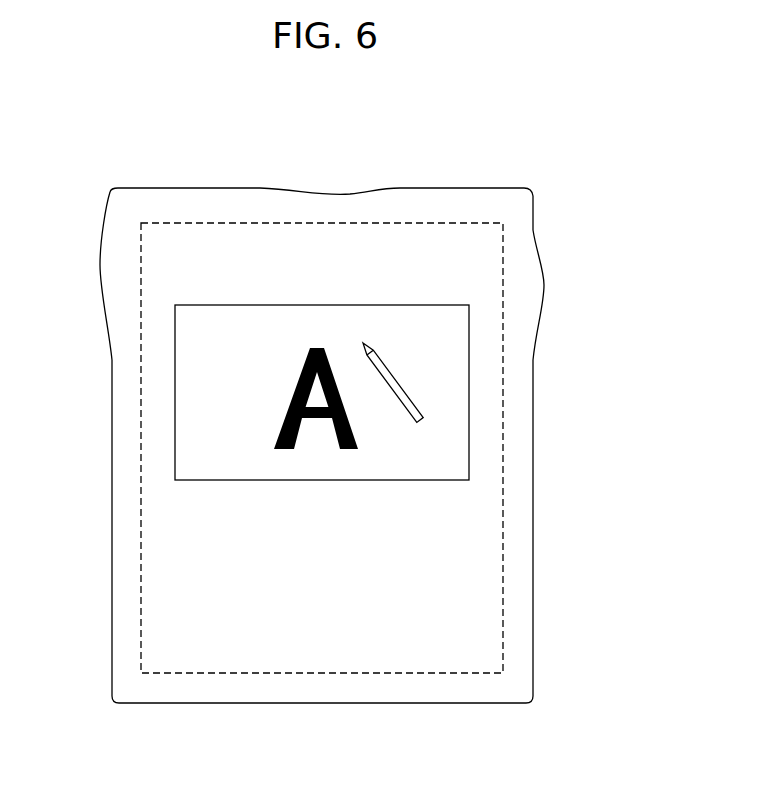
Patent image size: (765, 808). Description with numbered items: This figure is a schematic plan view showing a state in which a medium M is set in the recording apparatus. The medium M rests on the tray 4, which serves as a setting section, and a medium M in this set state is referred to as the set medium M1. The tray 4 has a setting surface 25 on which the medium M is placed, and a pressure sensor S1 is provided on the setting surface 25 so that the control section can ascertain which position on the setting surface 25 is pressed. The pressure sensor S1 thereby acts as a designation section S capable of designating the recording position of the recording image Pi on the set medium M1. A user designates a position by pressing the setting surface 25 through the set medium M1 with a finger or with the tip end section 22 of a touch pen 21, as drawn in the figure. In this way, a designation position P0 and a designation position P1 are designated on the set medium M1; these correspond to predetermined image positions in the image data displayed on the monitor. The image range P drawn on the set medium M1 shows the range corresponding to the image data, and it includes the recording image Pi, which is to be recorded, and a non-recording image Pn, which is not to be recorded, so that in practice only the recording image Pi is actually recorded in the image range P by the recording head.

The medium M is at (322, 396).
The set medium M1 is at (389, 188).
The tray 4 is at (395, 394).
The setting surface 25 is at (395, 448).
The designation section S is at (395, 448).
The pressure sensor S1 is at (473, 567).
The image range P is at (309, 313).
The designation position P0 is at (253, 313).
The designation position P1 is at (214, 298).
The non-recording image Pn is at (197, 298).
The recording image Pi is at (280, 425).
The touch pen 21 is at (445, 282).
The tip end section 22 is at (363, 343).